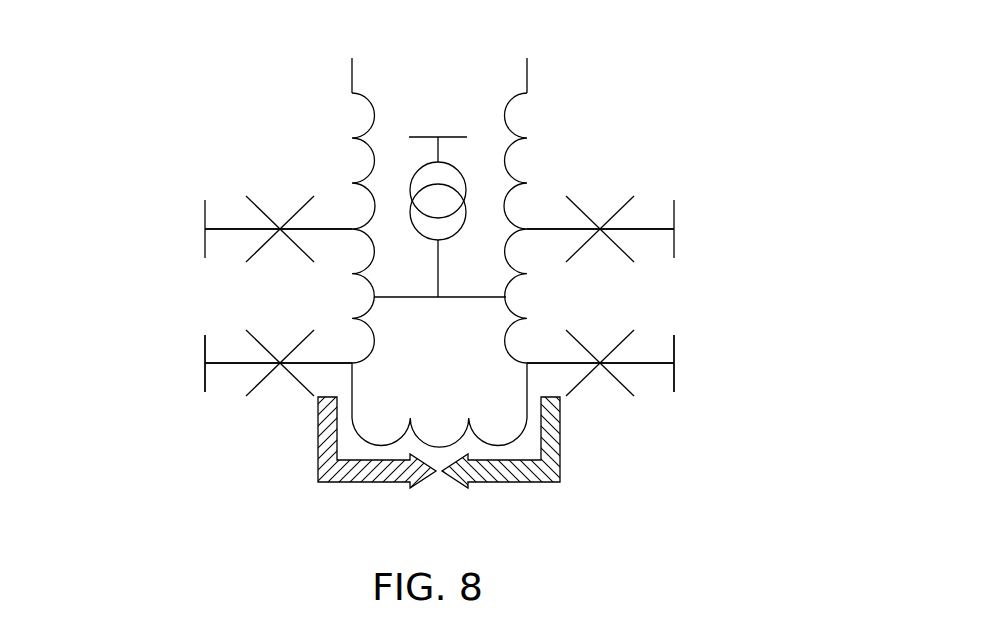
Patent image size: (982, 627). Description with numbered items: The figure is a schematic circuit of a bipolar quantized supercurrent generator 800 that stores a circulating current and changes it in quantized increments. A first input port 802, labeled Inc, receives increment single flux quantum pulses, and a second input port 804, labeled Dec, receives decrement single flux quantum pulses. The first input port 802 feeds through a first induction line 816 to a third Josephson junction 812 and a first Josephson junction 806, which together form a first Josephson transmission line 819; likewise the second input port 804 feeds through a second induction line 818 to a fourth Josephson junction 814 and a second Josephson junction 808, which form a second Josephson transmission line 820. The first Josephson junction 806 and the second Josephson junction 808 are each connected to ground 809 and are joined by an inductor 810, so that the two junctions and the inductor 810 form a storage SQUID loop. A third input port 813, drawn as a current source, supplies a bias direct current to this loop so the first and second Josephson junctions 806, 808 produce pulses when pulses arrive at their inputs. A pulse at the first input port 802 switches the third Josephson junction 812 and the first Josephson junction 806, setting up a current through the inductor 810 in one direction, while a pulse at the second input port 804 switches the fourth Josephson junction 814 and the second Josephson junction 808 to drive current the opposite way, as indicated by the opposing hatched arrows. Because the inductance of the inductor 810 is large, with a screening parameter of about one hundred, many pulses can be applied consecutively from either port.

The bipolar quantized supercurrent generator 800 is at (636, 68).
The first input port 802 is at (352, 72).
The second input port 804 is at (527, 72).
The first Josephson junction 806 is at (248, 338).
The second Josephson junction 808 is at (612, 389).
The ground 809 is at (205, 376).
The inductor 810 is at (437, 447).
The third Josephson junction 812 is at (248, 198).
The third input port 813 is at (438, 300).
The fourth Josephson junction 814 is at (630, 206).
The first induction line 816 is at (352, 138).
The second induction line 818 is at (527, 138).
The first Josephson transmission line 819 is at (123, 199).
The second Josephson transmission line 820 is at (756, 206).